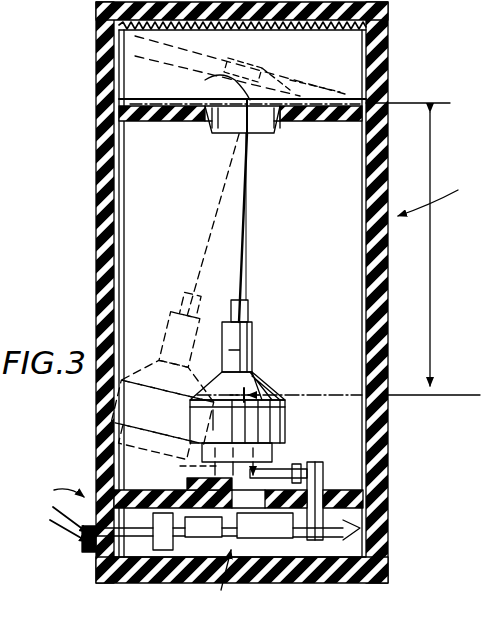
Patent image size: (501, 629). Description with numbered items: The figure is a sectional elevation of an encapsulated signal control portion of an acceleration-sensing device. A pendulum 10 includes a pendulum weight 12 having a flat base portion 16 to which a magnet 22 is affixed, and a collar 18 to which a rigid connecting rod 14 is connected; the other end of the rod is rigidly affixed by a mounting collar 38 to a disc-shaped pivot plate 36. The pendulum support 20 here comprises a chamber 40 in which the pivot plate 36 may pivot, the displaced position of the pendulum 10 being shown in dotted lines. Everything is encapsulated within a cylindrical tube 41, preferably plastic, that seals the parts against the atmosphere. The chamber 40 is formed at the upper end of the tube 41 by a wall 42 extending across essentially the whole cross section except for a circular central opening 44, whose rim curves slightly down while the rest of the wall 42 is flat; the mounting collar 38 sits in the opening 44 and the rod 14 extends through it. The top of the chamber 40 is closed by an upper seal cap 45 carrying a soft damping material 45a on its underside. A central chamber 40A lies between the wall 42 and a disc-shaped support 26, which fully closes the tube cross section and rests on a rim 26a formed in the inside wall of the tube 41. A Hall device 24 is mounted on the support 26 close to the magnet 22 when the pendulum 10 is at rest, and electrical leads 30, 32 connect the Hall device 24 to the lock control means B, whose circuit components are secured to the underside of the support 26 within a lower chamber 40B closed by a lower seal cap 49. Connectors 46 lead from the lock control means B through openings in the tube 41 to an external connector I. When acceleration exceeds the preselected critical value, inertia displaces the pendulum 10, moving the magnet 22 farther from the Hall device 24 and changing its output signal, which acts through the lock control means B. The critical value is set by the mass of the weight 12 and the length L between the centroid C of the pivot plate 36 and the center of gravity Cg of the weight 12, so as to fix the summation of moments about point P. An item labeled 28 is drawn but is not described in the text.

The pendulum 10 is at (196, 300).
The pendulum weight 12 is at (252, 350).
The rigid connecting rod 14 is at (248, 252).
The flat base portion 16 is at (190, 444).
The collar 18 is at (246, 318).
The pendulum support 20 is at (388, 46).
The magnet 22 is at (292, 420).
The Hall device 24 is at (238, 496).
The support 26 is at (213, 531).
The rim 26a is at (363, 533).
The connecting arm 28 is at (292, 468).
The electrical lead 30 is at (322, 470).
The electrical lead 32 is at (318, 480).
The pivot plate 36 is at (162, 62).
The mounting collar 38 is at (255, 130).
The chamber 40 is at (250, 60).
The central chamber 40A is at (333, 279).
The lower chamber 40B is at (331, 612).
The tube 41 is at (487, 193).
The wall 42 is at (170, 123).
The circular central opening 44 is at (340, 98).
The upper seal cap 45 is at (262, 34).
The soft damping material 45a is at (305, 38).
The connectors 46 is at (86, 550).
The lower seal cap 49 is at (388, 577).
The point P is at (388, 102).
The length L is at (432, 253).
The centroid C is at (220, 84).
The center of gravity Cg is at (196, 393).
The lock control means B is at (211, 581).
The connector I is at (61, 513).